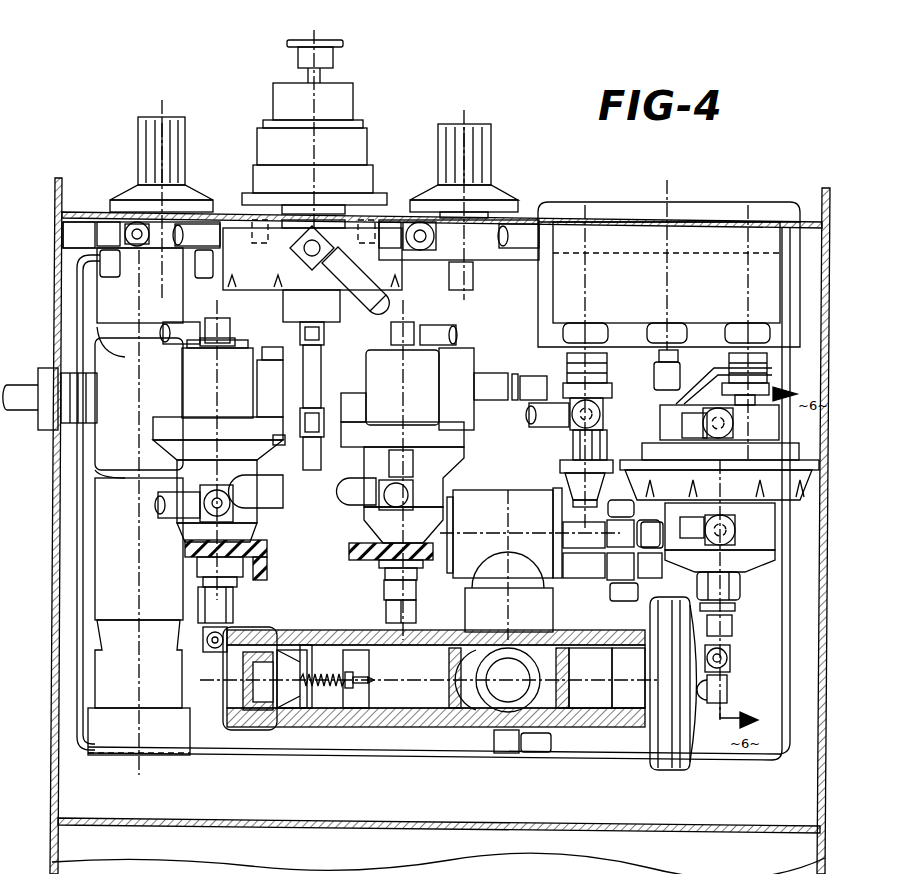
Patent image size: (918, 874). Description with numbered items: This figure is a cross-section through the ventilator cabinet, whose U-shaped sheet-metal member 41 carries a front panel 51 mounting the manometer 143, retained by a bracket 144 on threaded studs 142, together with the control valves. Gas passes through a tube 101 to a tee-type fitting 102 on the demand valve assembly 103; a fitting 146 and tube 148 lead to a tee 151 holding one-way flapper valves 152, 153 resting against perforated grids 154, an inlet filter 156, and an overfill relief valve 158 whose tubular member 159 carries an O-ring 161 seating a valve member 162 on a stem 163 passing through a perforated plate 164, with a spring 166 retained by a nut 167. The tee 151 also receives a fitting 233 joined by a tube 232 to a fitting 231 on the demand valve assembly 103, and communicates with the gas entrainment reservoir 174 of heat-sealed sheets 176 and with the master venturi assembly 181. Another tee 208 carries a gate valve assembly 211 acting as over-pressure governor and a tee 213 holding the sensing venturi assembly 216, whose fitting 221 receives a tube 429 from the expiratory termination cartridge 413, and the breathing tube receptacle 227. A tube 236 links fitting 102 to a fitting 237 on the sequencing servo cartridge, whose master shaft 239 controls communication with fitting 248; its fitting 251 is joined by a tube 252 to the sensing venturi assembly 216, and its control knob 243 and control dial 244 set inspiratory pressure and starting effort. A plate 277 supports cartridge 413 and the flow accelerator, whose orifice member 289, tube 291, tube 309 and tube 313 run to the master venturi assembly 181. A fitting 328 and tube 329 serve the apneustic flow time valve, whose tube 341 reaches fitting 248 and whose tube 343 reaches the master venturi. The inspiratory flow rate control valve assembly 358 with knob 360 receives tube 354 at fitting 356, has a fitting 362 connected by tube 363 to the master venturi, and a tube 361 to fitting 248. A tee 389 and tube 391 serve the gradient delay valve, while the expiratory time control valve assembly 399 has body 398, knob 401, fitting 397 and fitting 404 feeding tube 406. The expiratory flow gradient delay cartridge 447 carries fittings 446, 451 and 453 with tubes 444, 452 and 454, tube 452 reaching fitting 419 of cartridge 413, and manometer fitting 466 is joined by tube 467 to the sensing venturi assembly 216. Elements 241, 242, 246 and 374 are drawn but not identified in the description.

The U-shaped member 41 is at (842, 292).
The front panel 51 is at (97, 212).
The tube 101 is at (730, 686).
The tee-type fitting 102 is at (735, 628).
The demand valve assembly 103 is at (775, 547).
The nut 142 is at (770, 386).
The manometer 143 is at (636, 222).
The bracket 144 is at (540, 322).
The fitting 146 is at (735, 528).
The tube 148 is at (692, 548).
The tee 151 is at (466, 727).
The one-way flapper valve 152 is at (450, 664).
The one-way flapper valve 153 is at (548, 645).
The perforated grids 154 is at (462, 632).
The inlet filter 156 is at (668, 770).
The overfill relief valve 158 is at (294, 740).
The tubular member 159 is at (320, 730).
The O-ring 161 is at (280, 730).
The valve member 162 is at (245, 688).
The valve stem 163 is at (366, 683).
The perforated plate 164 is at (298, 636).
The spring 166 is at (318, 660).
The nut 167 is at (350, 655).
The gas entrainment reservoir 174 is at (760, 757).
The sheets 176 is at (392, 745).
The master venturi assembly 181 is at (500, 500).
The tee 208 is at (100, 597).
The gate valve assembly 211 is at (168, 750).
The tee 213 is at (93, 435).
The sensing venturi assembly 216 is at (478, 360).
The fitting 221 is at (492, 402).
The breathing tube receptacle 227 is at (97, 292).
The fitting 231 is at (684, 422).
The tube 232 is at (536, 752).
The fitting 233 is at (508, 755).
The tube 236 is at (413, 462).
The fitting 237 is at (404, 508).
The master shaft 239 is at (306, 80).
The rod 241 is at (276, 347).
The stop 242 is at (276, 440).
The control knob 243 is at (352, 102).
The control dial 244 is at (367, 182).
The cap 246 is at (306, 40).
The fitting 248 is at (258, 562).
The fitting 251 is at (300, 256).
The tube 252 is at (352, 306).
The plate 277 is at (185, 552).
The member 289 is at (560, 448).
The tube 291 is at (528, 416).
The tube 309 is at (586, 645).
The tube 313 is at (622, 498).
The fitting 328 is at (406, 322).
The tube 329 is at (456, 334).
The tube 341 is at (305, 470).
The tube 343 is at (618, 604).
The tube 354 is at (206, 278).
The fitting 356 is at (202, 226).
The inspiratory flow rate control valve assembly 358 is at (150, 110).
The control knob 360 is at (152, 278).
The tube 361 is at (157, 322).
The fitting 362 is at (112, 222).
The tube 363 is at (139, 232).
The tube 374 is at (100, 262).
The tee 389 is at (385, 220).
The tube 391 is at (398, 244).
The fitting 397 is at (522, 250).
The body 398 is at (443, 252).
The expiratory time control valve assembly 399 is at (500, 170).
The control knob 401 is at (462, 125).
The fitting 404 is at (503, 237).
The tube 406 is at (473, 280).
The expiratory termination cartridge 413 is at (380, 382).
The fitting 419 is at (426, 608).
The tube 429 is at (546, 378).
The tube 444 is at (178, 344).
The fitting 446 is at (218, 322).
The expiratory flow gradient delay cartridge 447 is at (162, 444).
The fitting 451 is at (204, 634).
The tube 452 is at (207, 658).
The fitting 453 is at (215, 488).
The tube 454 is at (168, 510).
The fitting 466 is at (671, 350).
The tube 467 is at (655, 370).